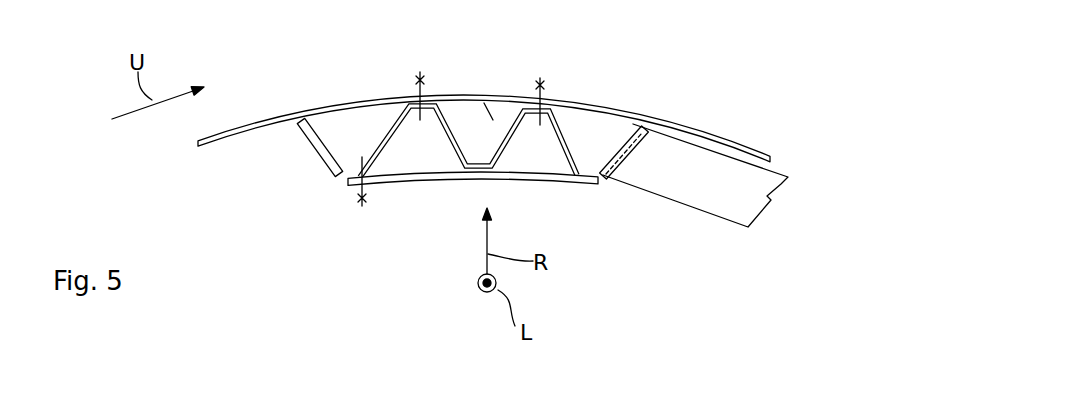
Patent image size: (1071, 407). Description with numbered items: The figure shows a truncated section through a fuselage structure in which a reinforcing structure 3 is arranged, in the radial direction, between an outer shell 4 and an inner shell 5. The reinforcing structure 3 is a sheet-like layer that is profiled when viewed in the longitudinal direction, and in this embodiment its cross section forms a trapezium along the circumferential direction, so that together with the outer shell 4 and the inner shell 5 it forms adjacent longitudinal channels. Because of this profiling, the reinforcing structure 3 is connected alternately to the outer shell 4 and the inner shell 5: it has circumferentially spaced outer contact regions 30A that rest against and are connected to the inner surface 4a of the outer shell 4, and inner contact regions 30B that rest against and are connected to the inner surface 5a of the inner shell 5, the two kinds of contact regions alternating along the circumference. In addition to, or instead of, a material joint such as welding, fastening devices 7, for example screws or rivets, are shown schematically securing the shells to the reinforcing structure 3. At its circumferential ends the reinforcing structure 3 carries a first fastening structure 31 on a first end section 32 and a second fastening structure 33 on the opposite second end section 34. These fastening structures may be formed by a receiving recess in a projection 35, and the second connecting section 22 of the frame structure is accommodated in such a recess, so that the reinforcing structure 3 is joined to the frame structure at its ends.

The reinforcing structure 3 is at (450, 121).
The outer shell 4 is at (274, 118).
The inner surface of the outer shell 4a is at (493, 120).
The inner shell 5 is at (430, 186).
The inner surface of the inner shell 5a is at (590, 140).
The fastening devices 7 is at (418, 79).
The second connecting section 22 is at (633, 168).
The outer contact regions 30A is at (548, 104).
The inner contact regions 30B is at (478, 176).
The first fastening structure 31 is at (320, 158).
The first end section 32 is at (323, 133).
The second fastening structure 33 is at (604, 180).
The second end section 34 is at (648, 116).
The projection 35 is at (643, 148).